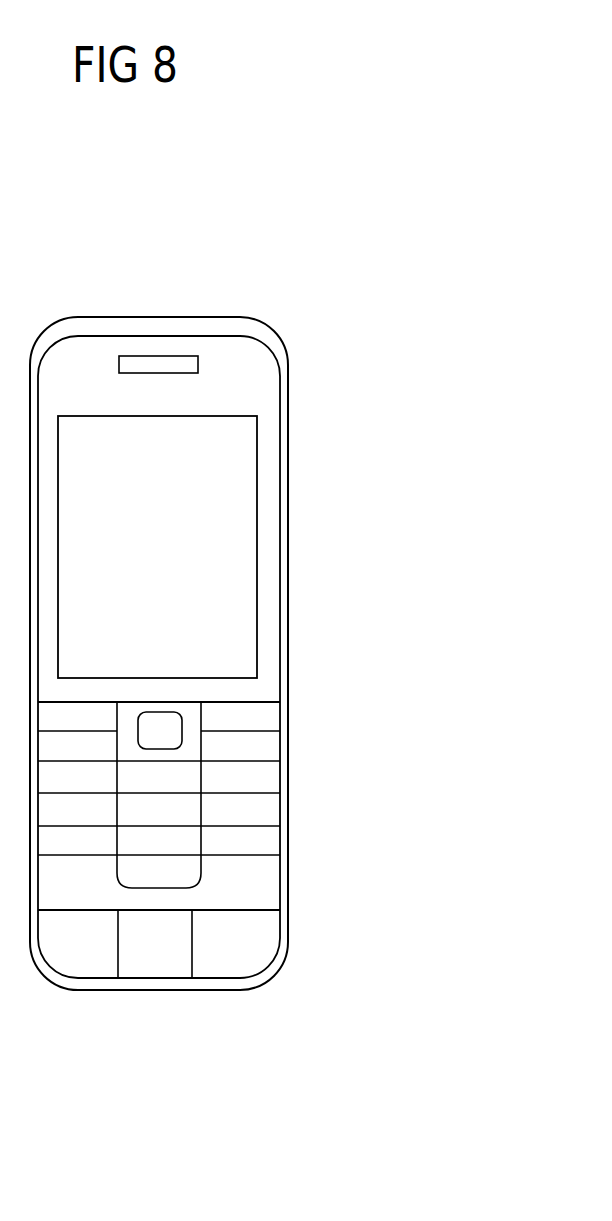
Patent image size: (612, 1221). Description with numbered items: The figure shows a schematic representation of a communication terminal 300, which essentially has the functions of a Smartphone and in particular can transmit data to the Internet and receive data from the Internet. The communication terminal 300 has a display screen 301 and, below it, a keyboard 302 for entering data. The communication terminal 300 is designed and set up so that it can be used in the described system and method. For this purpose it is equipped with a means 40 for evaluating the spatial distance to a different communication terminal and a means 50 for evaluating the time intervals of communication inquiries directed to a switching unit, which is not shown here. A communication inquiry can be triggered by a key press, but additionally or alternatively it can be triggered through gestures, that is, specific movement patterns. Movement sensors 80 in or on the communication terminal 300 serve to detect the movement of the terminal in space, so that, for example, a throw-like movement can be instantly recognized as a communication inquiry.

The communication terminal 300 is at (308, 397).
The display screen 301 is at (223, 528).
The keyboard 302 is at (248, 813).
The means for evaluating the spatial distance 40 is at (85, 960).
The means for evaluating time intervals 50 is at (153, 962).
The movement sensors 80 is at (247, 940).